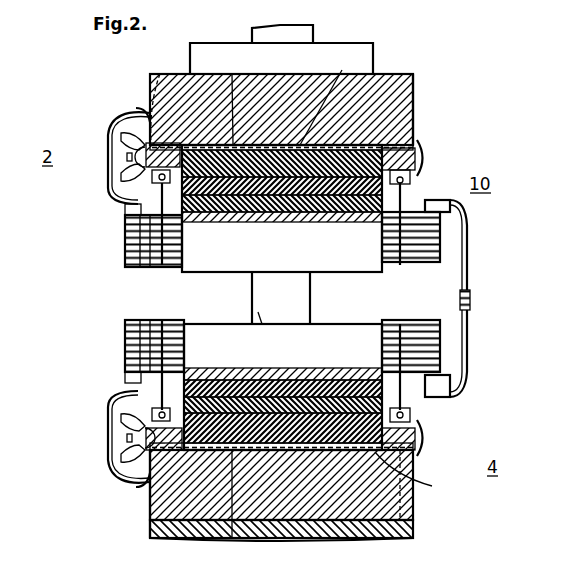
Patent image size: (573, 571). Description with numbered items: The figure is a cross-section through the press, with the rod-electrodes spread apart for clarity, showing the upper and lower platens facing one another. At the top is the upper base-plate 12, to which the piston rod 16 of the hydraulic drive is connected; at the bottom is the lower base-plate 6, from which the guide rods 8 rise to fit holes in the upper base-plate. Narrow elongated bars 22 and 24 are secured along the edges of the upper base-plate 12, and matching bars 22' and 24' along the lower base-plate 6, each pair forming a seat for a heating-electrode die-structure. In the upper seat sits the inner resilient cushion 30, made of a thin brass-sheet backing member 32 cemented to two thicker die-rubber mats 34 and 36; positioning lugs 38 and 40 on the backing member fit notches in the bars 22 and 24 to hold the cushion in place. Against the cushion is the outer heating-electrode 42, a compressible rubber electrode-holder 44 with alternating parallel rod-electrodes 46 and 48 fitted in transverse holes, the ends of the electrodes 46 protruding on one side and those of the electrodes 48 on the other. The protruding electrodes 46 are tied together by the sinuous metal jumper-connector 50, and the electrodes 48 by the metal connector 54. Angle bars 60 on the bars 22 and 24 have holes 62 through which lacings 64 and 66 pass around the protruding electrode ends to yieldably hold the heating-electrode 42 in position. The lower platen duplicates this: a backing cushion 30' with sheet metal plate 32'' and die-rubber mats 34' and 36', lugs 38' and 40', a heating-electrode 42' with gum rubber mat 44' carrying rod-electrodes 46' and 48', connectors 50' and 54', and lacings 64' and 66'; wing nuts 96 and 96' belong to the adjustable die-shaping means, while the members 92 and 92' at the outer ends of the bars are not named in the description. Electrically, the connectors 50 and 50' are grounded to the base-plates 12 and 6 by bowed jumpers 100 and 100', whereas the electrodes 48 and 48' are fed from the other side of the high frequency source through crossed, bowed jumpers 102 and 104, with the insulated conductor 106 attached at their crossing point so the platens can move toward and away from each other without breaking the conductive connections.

The lower base-plate 6 is at (413, 510).
The guide rods 8 is at (252, 294).
The upper base-plate 12 is at (413, 97).
The piston rod 16 is at (313, 30).
The bar 22 is at (119, 106).
The bar 22' is at (120, 486).
The bar 24 is at (416, 136).
The bar 24' is at (420, 441).
The inner resilient cushion 30 is at (331, 95).
The backing cushion 30' is at (416, 473).
The brass-sheet backing member 32 is at (221, 98).
The sheet metal plate 32'' is at (212, 503).
The die-rubber mat 34 is at (282, 232).
The die-rubber mat 34' is at (283, 358).
The die-rubber mat 36 is at (282, 201).
The die-rubber mat 36' is at (283, 390).
The positioning lug 38 is at (412, 92).
The lug 38' is at (126, 494).
The positioning lug 40 is at (128, 101).
The lug 40' is at (429, 485).
The outer heating-electrode 42 is at (327, 298).
The heating-electrode 42' is at (273, 309).
The electrode-holder 44 is at (282, 215).
The gum rubber mat 44' is at (283, 375).
The rod-electrodes 46 is at (114, 243).
The rod-electrodes 46' is at (131, 336).
The rod-electrodes 48 is at (411, 254).
The rod-electrodes 48' is at (422, 331).
The jumper-connector 50 is at (130, 241).
The connector 50' is at (134, 346).
The metal connector 54 is at (459, 212).
The connector 54' is at (464, 382).
The angle bars 60 is at (125, 208).
The hole 62 is at (158, 180).
The lacing 64 is at (141, 241).
The lacing 64' is at (169, 355).
The lacing 66 is at (421, 228).
The lacing 66' is at (294, 372).
The spring washer 92 is at (434, 156).
The spring washer 92' is at (437, 435).
The spring clip 96 is at (107, 162).
The wing nuts 96' is at (110, 430).
The bowed jumper 100 is at (106, 158).
The bowed jumper 100' is at (100, 427).
The crossed jumper 102 is at (468, 250).
The crossed jumper 104 is at (468, 345).
The insulated conductor 106 is at (471, 298).